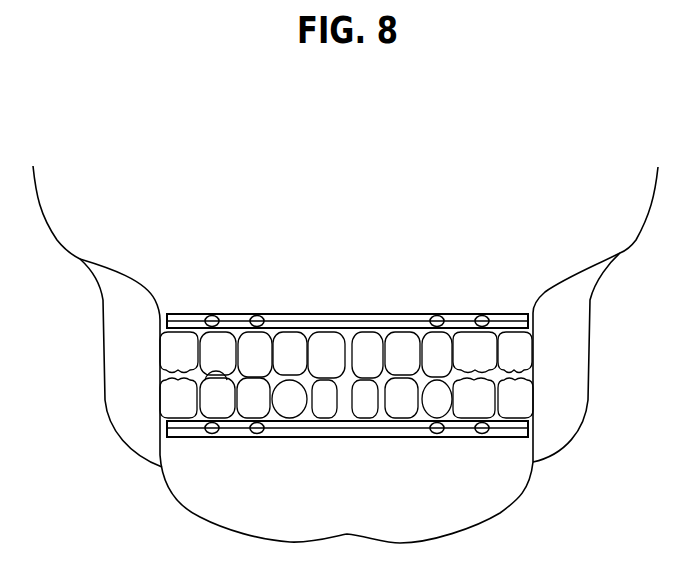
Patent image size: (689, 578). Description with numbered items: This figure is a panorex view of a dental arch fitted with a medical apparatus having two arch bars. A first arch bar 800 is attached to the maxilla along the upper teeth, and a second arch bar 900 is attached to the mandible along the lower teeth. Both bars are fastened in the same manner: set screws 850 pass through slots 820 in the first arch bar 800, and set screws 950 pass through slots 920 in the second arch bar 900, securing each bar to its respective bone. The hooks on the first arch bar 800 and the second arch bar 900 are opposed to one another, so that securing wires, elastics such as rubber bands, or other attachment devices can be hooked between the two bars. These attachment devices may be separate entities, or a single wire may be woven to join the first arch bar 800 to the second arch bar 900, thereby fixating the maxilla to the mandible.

The first arch bar 800 is at (462, 318).
The slots 820 is at (305, 318).
The set screws 850 is at (255, 313).
The second arch bar 900 is at (457, 431).
The slots 920 is at (327, 438).
The set screws 950 is at (256, 434).